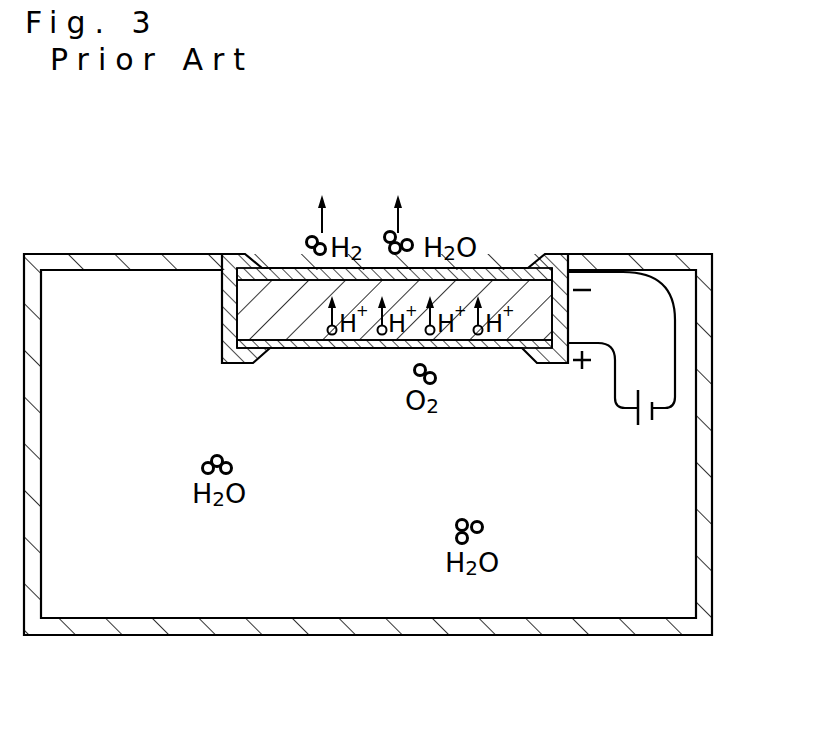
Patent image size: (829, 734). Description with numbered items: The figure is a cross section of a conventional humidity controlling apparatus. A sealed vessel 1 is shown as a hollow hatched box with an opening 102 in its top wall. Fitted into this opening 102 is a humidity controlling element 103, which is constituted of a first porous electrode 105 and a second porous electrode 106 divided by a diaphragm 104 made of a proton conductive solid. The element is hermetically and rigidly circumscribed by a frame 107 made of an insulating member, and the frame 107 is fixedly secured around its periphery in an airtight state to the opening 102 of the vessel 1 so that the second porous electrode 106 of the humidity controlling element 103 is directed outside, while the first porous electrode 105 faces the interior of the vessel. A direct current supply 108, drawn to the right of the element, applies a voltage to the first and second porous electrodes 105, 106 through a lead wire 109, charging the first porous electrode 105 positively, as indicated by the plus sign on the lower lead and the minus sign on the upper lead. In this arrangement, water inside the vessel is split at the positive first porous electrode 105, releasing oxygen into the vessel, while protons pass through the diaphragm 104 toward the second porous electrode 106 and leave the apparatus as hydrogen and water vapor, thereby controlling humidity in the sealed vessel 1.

The container 1 is at (325, 634).
The opening 102 is at (283, 267).
The humidity controlling element 103 is at (334, 362).
The diaphragm 104 is at (525, 348).
The first porous electrode 105 is at (295, 346).
The second porous electrode 106 is at (502, 267).
The frame 107 is at (265, 267).
The direct current supply 108 is at (647, 428).
The lead wire 109 is at (615, 388).